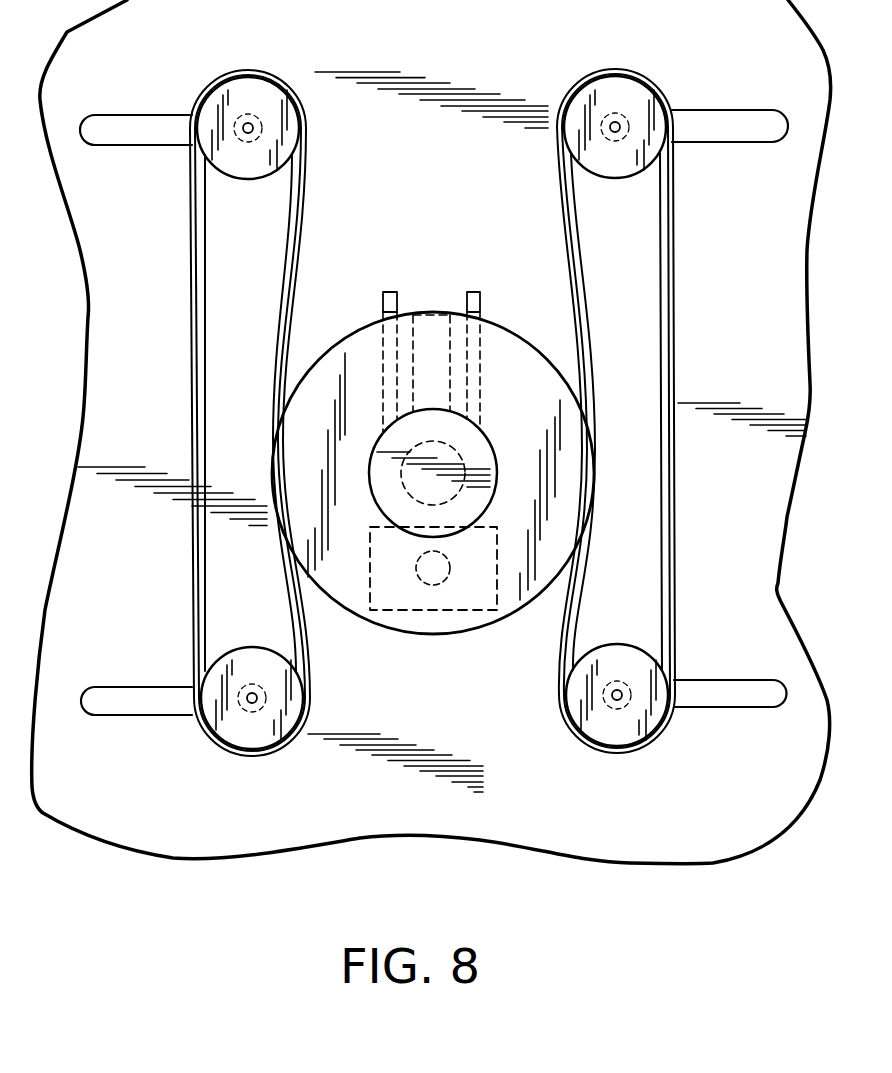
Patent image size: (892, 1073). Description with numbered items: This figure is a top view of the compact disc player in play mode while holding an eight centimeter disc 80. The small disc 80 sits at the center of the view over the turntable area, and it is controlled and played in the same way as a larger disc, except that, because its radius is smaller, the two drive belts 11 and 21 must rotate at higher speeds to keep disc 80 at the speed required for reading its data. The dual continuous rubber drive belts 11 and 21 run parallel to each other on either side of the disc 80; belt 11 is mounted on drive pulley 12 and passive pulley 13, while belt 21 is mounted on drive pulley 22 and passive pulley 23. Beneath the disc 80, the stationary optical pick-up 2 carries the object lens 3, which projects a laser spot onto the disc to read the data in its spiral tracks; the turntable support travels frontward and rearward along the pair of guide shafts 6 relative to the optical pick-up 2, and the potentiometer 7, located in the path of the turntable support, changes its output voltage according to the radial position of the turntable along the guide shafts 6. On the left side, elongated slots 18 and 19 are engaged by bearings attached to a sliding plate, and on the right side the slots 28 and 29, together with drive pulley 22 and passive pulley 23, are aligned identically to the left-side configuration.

The optical pick-up 2 is at (447, 597).
The object lens 3 is at (427, 577).
The guide shafts 6 is at (472, 292).
The potentiometer 7 is at (438, 360).
The drive belt 11 is at (192, 320).
The drive pulley 12 is at (253, 738).
The passive pulley 13 is at (253, 87).
The elongated slot 18 is at (137, 700).
The elongated slot 19 is at (133, 117).
The drive belt 21 is at (673, 313).
The drive pulley 22 is at (587, 723).
The passive pulley 23 is at (605, 85).
The slot 28 is at (713, 703).
The slot 29 is at (723, 110).
The 8 cm disc 80 is at (350, 345).